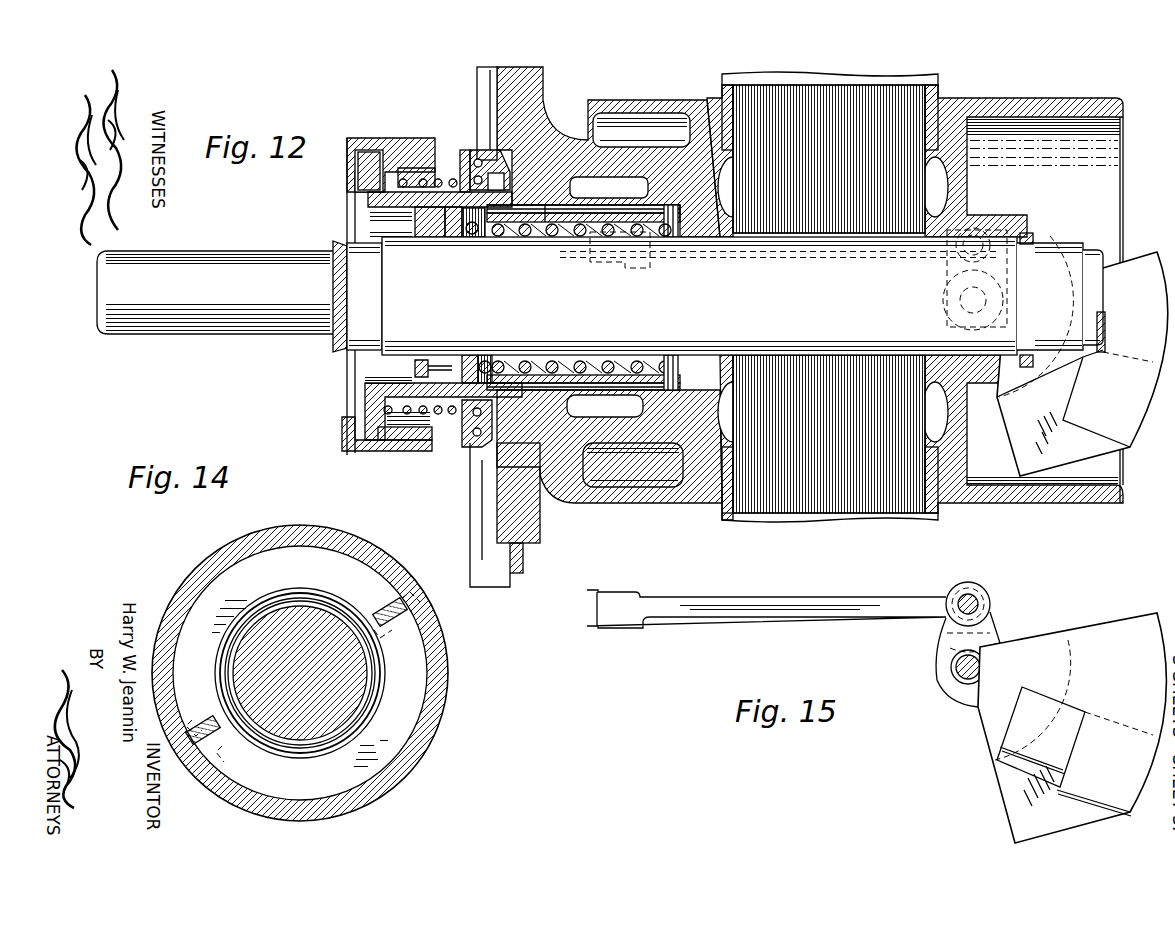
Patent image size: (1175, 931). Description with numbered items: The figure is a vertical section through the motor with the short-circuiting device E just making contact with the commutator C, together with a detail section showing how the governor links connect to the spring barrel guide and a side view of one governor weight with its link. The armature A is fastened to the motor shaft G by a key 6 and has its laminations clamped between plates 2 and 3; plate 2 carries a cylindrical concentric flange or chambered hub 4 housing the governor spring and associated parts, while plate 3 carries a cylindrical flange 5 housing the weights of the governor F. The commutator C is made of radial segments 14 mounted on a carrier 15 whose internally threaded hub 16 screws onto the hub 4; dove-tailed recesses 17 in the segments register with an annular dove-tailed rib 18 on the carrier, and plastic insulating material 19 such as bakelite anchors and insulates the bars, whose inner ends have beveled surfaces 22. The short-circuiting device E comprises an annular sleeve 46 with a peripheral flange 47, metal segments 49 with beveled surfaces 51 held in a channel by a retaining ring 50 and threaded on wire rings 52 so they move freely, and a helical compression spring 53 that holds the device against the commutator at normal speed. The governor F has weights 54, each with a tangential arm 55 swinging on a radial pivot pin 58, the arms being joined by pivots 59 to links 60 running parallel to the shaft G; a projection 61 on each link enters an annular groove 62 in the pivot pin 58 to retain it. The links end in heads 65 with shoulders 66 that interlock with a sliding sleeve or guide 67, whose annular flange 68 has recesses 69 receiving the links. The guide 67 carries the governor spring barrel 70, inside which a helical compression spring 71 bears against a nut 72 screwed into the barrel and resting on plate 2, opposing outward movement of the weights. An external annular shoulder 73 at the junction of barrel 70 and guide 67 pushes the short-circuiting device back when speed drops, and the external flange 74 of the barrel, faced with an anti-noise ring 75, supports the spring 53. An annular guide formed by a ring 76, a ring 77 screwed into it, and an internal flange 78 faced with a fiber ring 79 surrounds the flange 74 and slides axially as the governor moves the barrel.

In FIG. 12, the armature plate 2 is at (705, 358).
In FIG. 12, the armature plate 3 is at (957, 496).
In FIG. 12, the cylindrical concentric flange or chambered hub 4 is at (621, 448).
In FIG. 12, the cylindrical concentric flange 5 is at (1048, 100).
In FIG. 12, the key 6 is at (784, 240).
In FIG. 12, the commutator segments 14 is at (686, 141).
In FIG. 12, the ring or carrier 15 is at (541, 533).
In FIG. 12, the internally threaded hub 16 is at (556, 465).
In FIG. 12, the dove-tailed recesses 17 is at (482, 516).
In FIG. 12, the annular dove-tailed rib 18 is at (512, 512).
In FIG. 12, the plastic insulating material 19 is at (524, 566).
In FIG. 12, the beveled surfaces 22 is at (496, 160).
In FIG. 12, the annular carrier or sleeve 46 is at (478, 238).
In FIG. 12, the peripheral flange 47 is at (463, 152).
In FIG. 12, the metal segments 49 is at (478, 148).
In FIG. 12, the retaining ring 50 is at (576, 182).
In FIG. 12, the beveled surfaces 51 is at (488, 432).
In FIG. 12, the wire rings 52 is at (466, 443).
In FIG. 12, the helical compression spring 53 is at (441, 416).
In FIG. 12, the weights 54 is at (1126, 440).
In FIG. 15, the weights 54 is at (1123, 670).
In FIG. 12, the arm 55 is at (1030, 233).
In FIG. 15, the arm 55 is at (938, 648).
In FIG. 12, the pivot pins 58 is at (943, 298).
In FIG. 15, the pivot pins 58 is at (966, 680).
In FIG. 12, the pivots 59 is at (976, 237).
In FIG. 15, the pivots 59 is at (968, 596).
In FIG. 12, the links 60 is at (838, 259).
In FIG. 15, the links 60 is at (830, 598).
In FIG. 12, the projection 61 is at (1030, 269).
In FIG. 15, the projection 61 is at (995, 626).
In FIG. 12, the annular groove 62 is at (1005, 299).
In FIG. 15, the annular groove 62 is at (958, 678).
In FIG. 12, the heads 65 is at (628, 270).
In FIG. 14, the heads 65 is at (402, 616).
In FIG. 15, the heads 65 is at (632, 596).
In FIG. 12, the shoulders 66 is at (650, 256).
In FIG. 15, the shoulders 66 is at (647, 626).
In FIG. 12, the sleeve or guide 67 is at (583, 397).
In FIG. 14, the sleeve or guide 67 is at (400, 697).
In FIG. 14, the annular flange 68 is at (392, 746).
In FIG. 14, the recesses 69 is at (412, 642).
In FIG. 12, the governor spring barrel 70 is at (448, 238).
In FIG. 12, the helical compression spring 71 is at (603, 361).
In FIG. 14, the helical compression spring 71 is at (292, 600).
In FIG. 12, the nut 72 is at (425, 238).
In FIG. 12, the external annular shoulder 73 is at (508, 222).
In FIG. 12, the external flange 74 is at (372, 150).
In FIG. 12, the anti-noise ring 75 is at (388, 150).
In FIG. 12, the ring 76 is at (352, 455).
In FIG. 12, the ring 77 is at (393, 442).
In FIG. 12, the internal flange 78 is at (342, 428).
In FIG. 12, the fiber ring 79 is at (343, 413).
In FIG. 12, the armature A is at (830, 308).
In FIG. 12, the commutator C is at (546, 80).
In FIG. 12, the short-circuiting device E is at (510, 152).
In FIG. 12, the governor F is at (1082, 364).
In FIG. 15, the governor F is at (1072, 721).
In FIG. 12, the motor shaft G is at (870, 294).
In FIG. 14, the motor shaft G is at (308, 640).